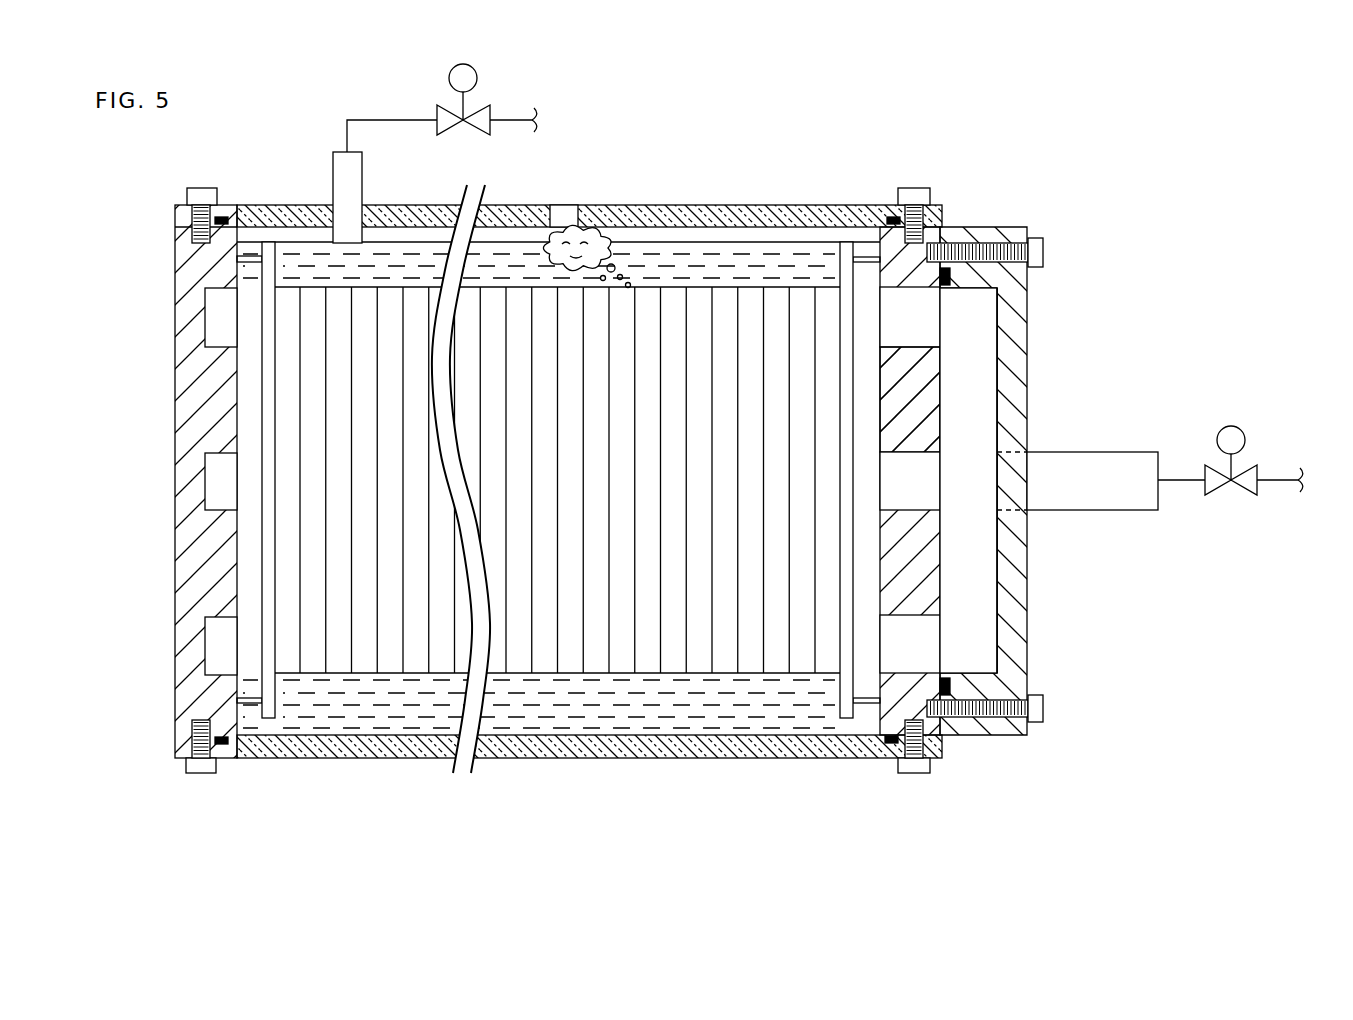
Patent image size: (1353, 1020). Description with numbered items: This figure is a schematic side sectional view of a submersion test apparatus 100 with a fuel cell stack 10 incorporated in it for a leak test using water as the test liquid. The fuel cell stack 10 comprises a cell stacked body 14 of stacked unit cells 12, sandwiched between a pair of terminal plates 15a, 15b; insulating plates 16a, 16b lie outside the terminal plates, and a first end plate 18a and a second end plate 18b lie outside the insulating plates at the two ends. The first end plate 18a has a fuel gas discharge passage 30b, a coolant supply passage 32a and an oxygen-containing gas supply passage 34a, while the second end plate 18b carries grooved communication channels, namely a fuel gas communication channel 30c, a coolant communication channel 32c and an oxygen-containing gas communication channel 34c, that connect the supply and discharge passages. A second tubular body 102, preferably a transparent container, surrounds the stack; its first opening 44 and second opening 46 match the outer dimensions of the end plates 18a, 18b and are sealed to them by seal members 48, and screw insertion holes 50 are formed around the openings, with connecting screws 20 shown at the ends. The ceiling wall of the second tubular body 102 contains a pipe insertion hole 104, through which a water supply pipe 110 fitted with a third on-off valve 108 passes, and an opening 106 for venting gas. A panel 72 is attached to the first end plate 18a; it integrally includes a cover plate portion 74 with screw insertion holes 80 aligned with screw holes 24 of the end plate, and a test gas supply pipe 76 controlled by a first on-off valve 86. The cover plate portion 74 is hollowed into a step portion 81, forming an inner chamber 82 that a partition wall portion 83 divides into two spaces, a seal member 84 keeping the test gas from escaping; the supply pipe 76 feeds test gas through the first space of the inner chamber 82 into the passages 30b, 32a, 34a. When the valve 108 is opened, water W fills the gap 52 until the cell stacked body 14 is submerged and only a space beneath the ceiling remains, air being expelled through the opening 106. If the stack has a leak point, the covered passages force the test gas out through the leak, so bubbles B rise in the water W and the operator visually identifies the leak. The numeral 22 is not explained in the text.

The submersion test apparatus 100 is at (729, 184).
The fuel cell stack 10 is at (557, 548).
The unit cell 12 is at (577, 657).
The cell stacked body 14 is at (675, 686).
The terminal plate 15a is at (848, 268).
The terminal plate 15b is at (268, 572).
The insulating plate 16a is at (866, 278).
The insulating plate 16b is at (250, 540).
The first end plate 18a is at (922, 408).
The second end plate 18b is at (200, 412).
The connecting screw 20 is at (206, 189).
The seal member 22 is at (205, 240).
The screw hole 24 is at (937, 708).
The fuel gas discharge passage 30b is at (926, 673).
The fuel gas communication channel 30c is at (215, 638).
The coolant supply passage 32a is at (928, 510).
The coolant communication channel 32c is at (215, 476).
The oxygen-containing gas supply passage 34a is at (928, 347).
The oxygen-containing gas communication channel 34c is at (215, 322).
The first opening 44 is at (865, 725).
The second opening 46 is at (195, 728).
The seal member 48 is at (223, 748).
The screw insertion hole 50 is at (202, 212).
The gap 52 is at (671, 247).
The panel 72 is at (1034, 504).
The cover plate portion 74 is at (1013, 355).
The test gas supply pipe 76 is at (1090, 452).
The screw insertion hole 80 is at (995, 710).
The step portion 81 is at (992, 615).
The inner chamber 82 is at (997, 528).
The partition wall portion 83 is at (1002, 620).
The seal member 84 is at (950, 276).
The first on-off valve 86 is at (1237, 426).
The second tubular body 102 is at (259, 205).
The pipe insertion hole 104 is at (340, 215).
The opening 106 is at (568, 212).
The third on-off valve 108 is at (478, 76).
The water supply pipe 110 is at (362, 170).
The bubbles B is at (605, 240).
The water W is at (750, 250).